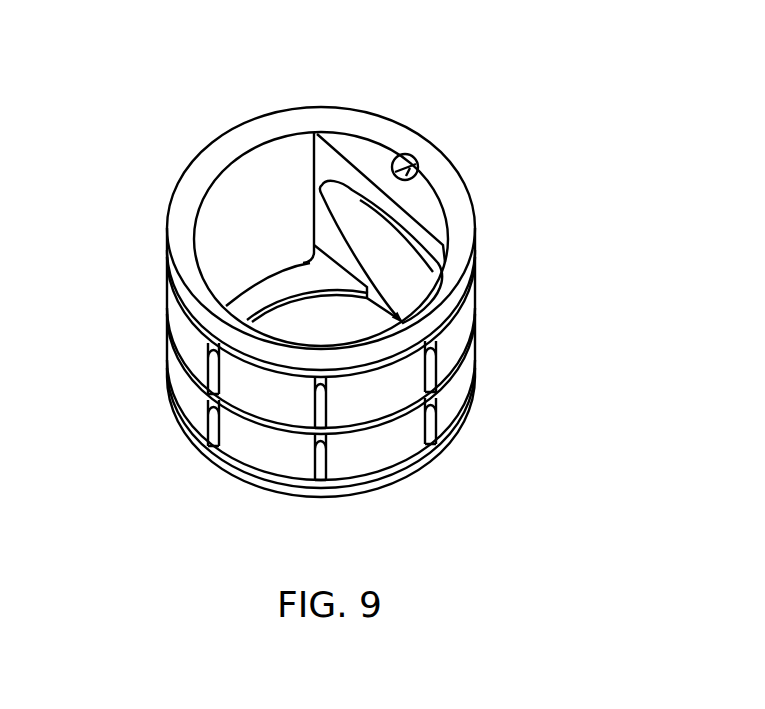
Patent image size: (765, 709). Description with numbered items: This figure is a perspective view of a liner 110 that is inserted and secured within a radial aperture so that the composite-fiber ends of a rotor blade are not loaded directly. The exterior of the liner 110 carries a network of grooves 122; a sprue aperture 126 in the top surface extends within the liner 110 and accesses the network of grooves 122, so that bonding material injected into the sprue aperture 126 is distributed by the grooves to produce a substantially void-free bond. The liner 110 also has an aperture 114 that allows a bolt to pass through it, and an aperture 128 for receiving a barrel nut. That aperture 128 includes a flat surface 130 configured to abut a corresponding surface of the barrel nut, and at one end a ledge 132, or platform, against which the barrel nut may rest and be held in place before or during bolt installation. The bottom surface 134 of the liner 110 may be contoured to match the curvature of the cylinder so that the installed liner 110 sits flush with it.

The liner 110 is at (482, 104).
The aperture 114 is at (323, 223).
The network of grooves 122 is at (188, 378).
The sprue aperture 126 is at (423, 163).
The aperture 128 is at (197, 220).
The flat surface 130 is at (423, 218).
The ledge 132 is at (243, 310).
The bottom surface 134 is at (430, 472).